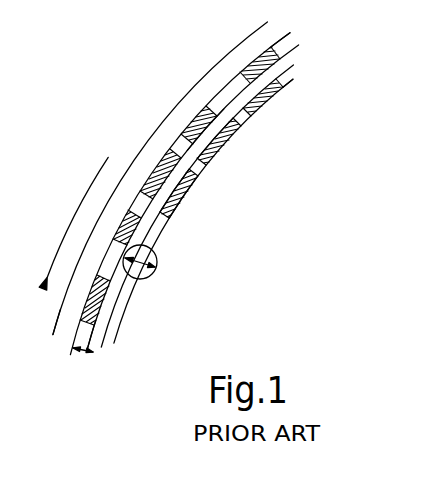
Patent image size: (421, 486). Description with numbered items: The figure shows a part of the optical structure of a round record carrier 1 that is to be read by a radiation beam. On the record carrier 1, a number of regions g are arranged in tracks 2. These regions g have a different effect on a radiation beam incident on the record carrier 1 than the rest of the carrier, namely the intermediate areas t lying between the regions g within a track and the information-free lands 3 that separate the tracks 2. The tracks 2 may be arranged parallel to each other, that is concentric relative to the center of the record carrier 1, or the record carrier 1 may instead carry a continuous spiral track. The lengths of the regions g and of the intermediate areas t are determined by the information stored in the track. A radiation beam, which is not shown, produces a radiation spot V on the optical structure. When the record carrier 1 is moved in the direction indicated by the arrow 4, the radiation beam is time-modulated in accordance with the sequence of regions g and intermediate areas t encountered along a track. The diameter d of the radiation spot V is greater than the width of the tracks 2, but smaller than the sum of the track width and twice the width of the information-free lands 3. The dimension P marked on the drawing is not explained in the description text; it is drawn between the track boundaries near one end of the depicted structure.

The record carrier 1 is at (264, 188).
The tracks 2 is at (298, 68).
The information-free lands 3 is at (100, 328).
The arrow 4 is at (78, 209).
The regions g is at (203, 115).
The intermediate areas t is at (192, 170).
The radiation spot V is at (157, 256).
The diameter of the radiation spot d is at (144, 273).
The pitch dimension of outer strip P is at (75, 357).